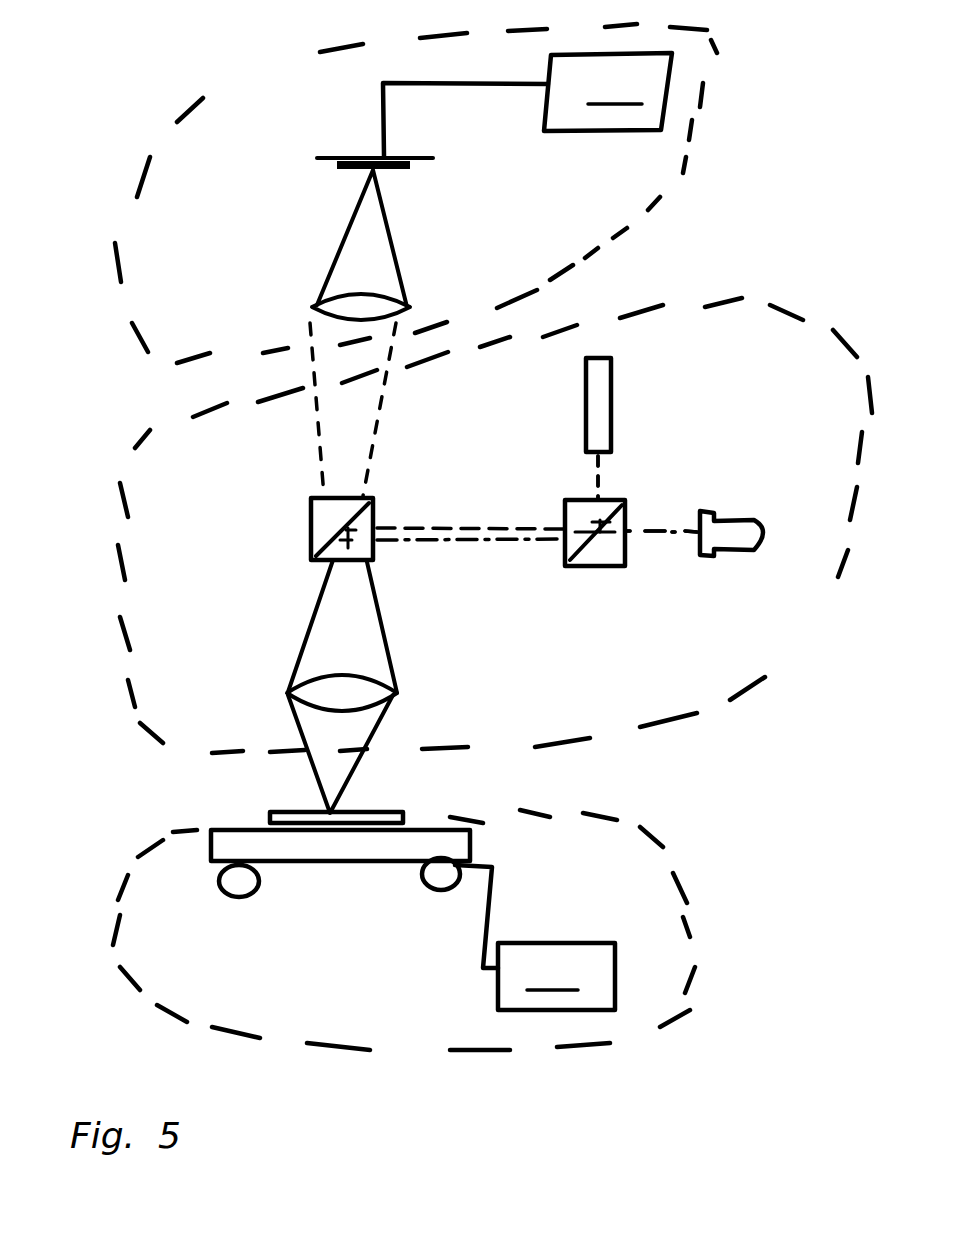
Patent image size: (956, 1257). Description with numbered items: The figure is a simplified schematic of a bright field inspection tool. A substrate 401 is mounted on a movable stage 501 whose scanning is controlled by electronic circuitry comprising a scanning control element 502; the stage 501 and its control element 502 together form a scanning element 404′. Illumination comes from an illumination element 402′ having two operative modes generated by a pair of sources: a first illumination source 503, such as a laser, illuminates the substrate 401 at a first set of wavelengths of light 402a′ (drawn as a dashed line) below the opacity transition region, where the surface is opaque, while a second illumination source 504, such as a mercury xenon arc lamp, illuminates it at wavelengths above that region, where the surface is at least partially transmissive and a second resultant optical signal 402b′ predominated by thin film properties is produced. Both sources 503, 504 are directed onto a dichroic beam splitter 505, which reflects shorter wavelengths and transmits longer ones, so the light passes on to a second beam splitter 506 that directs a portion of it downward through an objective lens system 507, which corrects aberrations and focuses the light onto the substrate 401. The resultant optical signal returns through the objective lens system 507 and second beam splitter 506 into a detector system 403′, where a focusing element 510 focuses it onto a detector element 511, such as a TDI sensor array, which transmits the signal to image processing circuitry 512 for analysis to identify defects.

The substrate 401 is at (403, 812).
The illumination element 402′ is at (805, 645).
The first set of wavelengths of light 402a′ is at (598, 481).
The second resultant optical signal 402b′ is at (657, 537).
The detector system 403′ is at (278, 62).
The scanning element 404′ is at (112, 893).
The movable stage 501 is at (470, 842).
The scanning control element 502 is at (535, 937).
The first illumination source 503 is at (612, 400).
The second illumination source 504 is at (740, 510).
The dichroic beam splitter 505 is at (590, 567).
The second beam splitter 506 is at (311, 517).
The objective lens system 507 is at (397, 693).
The focusing element 510 is at (312, 307).
The detector element 511 is at (326, 152).
The image processing circuitry 512 is at (527, 104).